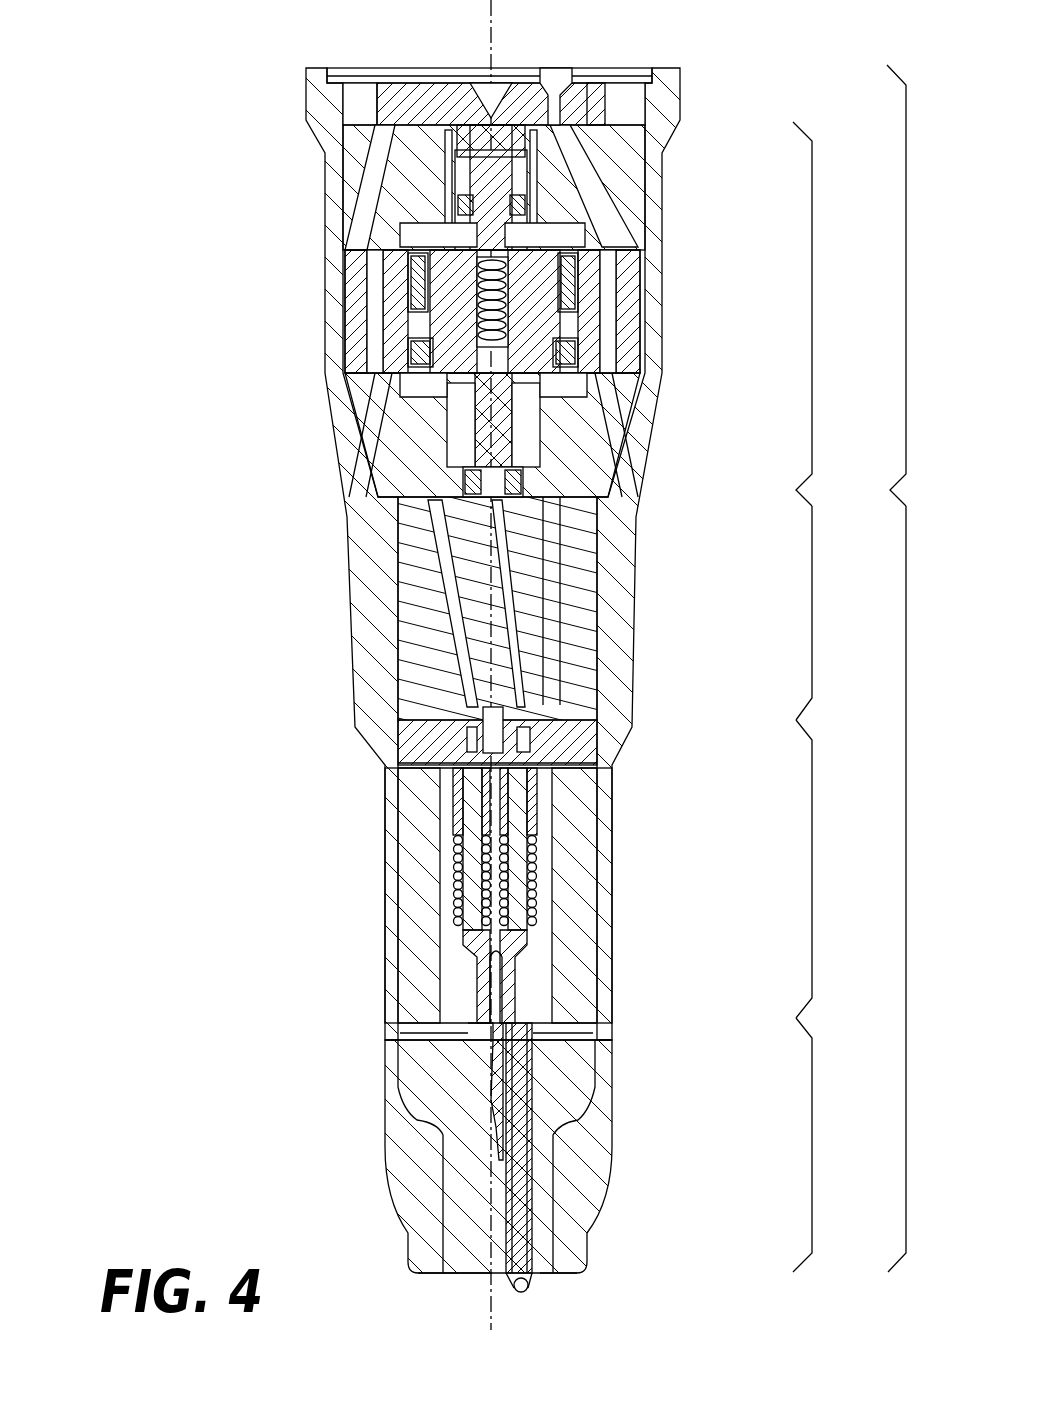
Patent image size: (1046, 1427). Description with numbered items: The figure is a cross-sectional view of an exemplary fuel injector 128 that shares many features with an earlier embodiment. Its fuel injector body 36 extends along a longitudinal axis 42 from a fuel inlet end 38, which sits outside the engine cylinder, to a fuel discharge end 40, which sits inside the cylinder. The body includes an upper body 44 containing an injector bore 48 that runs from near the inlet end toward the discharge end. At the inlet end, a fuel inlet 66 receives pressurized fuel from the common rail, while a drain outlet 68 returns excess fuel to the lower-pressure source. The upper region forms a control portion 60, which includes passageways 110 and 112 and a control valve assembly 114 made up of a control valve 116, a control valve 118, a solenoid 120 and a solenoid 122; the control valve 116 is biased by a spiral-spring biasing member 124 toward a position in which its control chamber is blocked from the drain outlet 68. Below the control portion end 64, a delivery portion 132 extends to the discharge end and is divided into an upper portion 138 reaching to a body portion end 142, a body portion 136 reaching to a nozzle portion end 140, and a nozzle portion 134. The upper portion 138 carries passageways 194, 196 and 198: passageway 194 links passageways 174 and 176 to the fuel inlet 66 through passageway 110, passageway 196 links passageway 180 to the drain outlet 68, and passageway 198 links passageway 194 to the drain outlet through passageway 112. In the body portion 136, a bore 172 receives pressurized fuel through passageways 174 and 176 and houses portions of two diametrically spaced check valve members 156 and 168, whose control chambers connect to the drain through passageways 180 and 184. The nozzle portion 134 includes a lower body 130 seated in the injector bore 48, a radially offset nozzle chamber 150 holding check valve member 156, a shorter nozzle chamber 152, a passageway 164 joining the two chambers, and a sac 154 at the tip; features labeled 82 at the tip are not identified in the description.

The fuel injector body 36 is at (312, 85).
The fuel inlet end 38 is at (340, 52).
The fuel discharge end 40 is at (410, 1277).
The longitudinal axis 42 is at (492, 33).
The upper body 44 is at (650, 338).
The injector bore 48 is at (640, 182).
The control portion 60 is at (906, 316).
The control portion end 64 is at (660, 515).
The fuel inlet 66 is at (565, 72).
The drain outlet 68 is at (335, 180).
The spray orifices 82 is at (505, 1277).
The passageway 110 is at (605, 240).
The passageway 112 is at (375, 322).
The control valve assembly 114 is at (812, 316).
The control valve 116 is at (500, 440).
The control valve 118 is at (505, 228).
The solenoid 120 is at (410, 345).
The solenoid 122 is at (410, 258).
The biasing member 124 is at (515, 300).
The fuel injector 128 is at (103, 128).
The lower body 130 is at (580, 1050).
The delivery portion 132 is at (906, 860).
The nozzle portion 134 is at (812, 1141).
The body portion 136 is at (812, 868).
The upper portion 138 is at (812, 610).
The nozzle portion end 140 is at (620, 1015).
The body portion end 142 is at (635, 760).
The nozzle chamber 150 is at (540, 1195).
The nozzle chamber 152 is at (440, 1045).
The sac 154 is at (540, 1278).
The check valve member 156 is at (515, 970).
The passageway 164 is at (490, 1095).
The check valve member 168 is at (470, 970).
The bore 172 is at (545, 937).
The passageway 174 is at (530, 748).
The passageway 176 is at (455, 775).
The passageway 180 is at (500, 710).
The passageway 184 is at (478, 735).
The passageway 194 is at (552, 580).
The passageway 196 is at (510, 625).
The passageway 198 is at (445, 582).